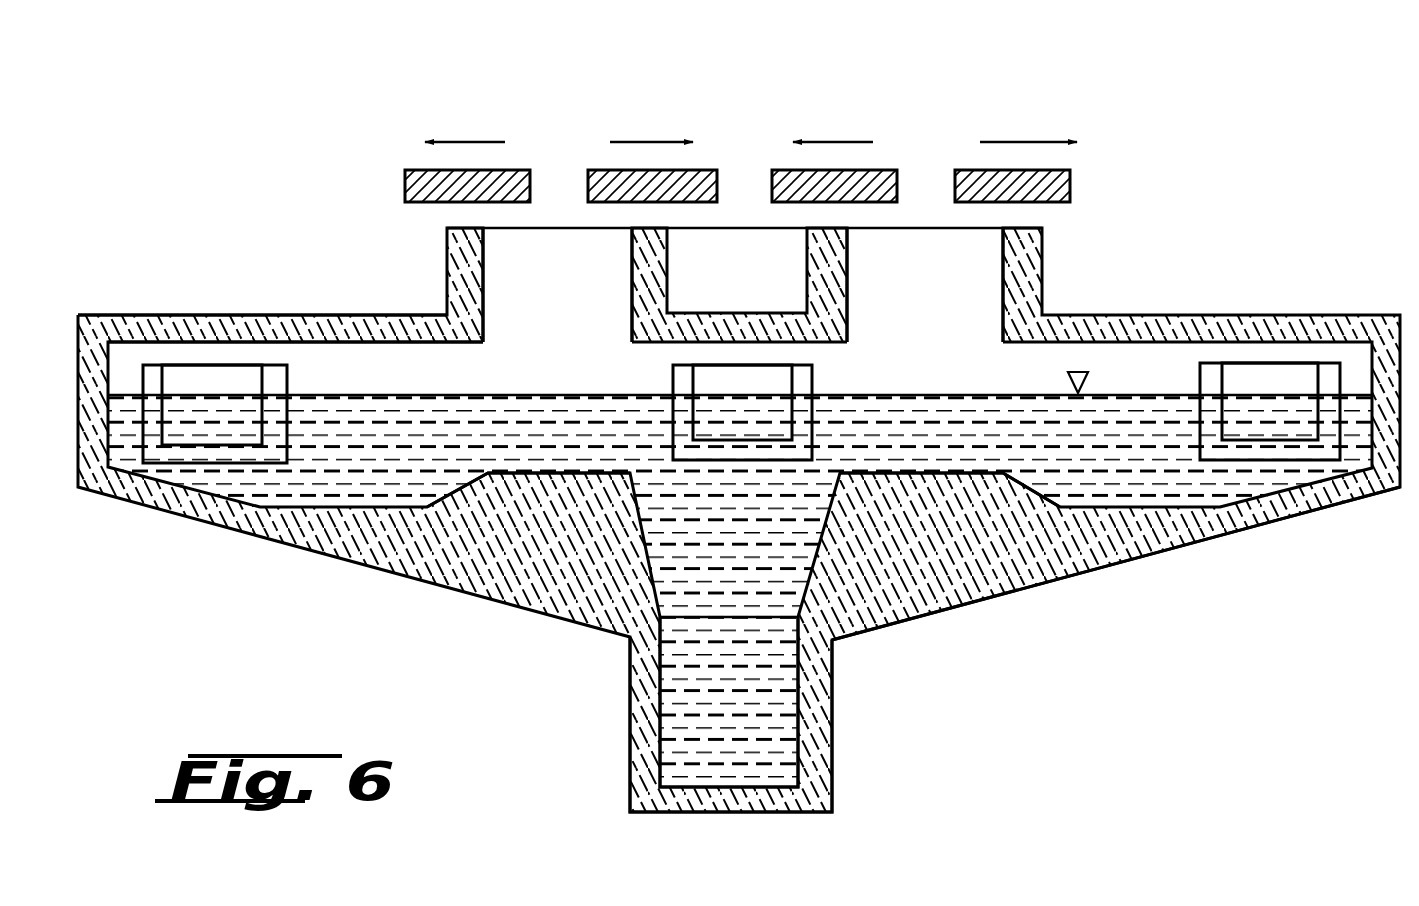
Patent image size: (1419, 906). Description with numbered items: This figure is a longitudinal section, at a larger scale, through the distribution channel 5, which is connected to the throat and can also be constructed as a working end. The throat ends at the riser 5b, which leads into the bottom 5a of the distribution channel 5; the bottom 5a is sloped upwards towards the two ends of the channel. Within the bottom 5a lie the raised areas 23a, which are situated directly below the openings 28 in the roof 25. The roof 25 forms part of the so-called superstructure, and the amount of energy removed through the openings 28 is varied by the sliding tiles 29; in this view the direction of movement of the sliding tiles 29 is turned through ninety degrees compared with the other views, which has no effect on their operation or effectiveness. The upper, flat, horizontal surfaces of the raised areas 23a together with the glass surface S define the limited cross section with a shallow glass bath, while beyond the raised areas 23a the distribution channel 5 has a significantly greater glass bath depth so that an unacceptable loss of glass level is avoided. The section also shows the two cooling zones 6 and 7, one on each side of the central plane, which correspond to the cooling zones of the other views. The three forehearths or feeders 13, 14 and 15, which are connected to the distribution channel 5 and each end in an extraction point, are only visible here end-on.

The distribution channel 5 is at (1236, 272).
The bottom of the distribution channel 5a is at (1122, 542).
The riser 5b is at (745, 665).
The cooling zone 6 is at (560, 147).
The cooling zone 7 is at (929, 147).
The forehearth 13 is at (250, 378).
The forehearth 14 is at (715, 378).
The forehearth 15 is at (1240, 378).
The raised areas of the bottom 23a is at (550, 492).
The roof 25 is at (285, 315).
The openings 28 is at (540, 302).
The sliding tiles 29 is at (405, 186).
The glass surface S is at (1025, 392).